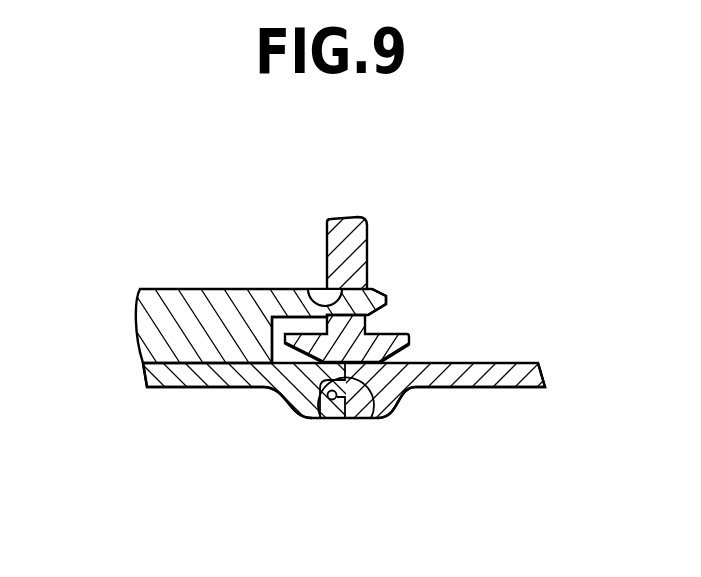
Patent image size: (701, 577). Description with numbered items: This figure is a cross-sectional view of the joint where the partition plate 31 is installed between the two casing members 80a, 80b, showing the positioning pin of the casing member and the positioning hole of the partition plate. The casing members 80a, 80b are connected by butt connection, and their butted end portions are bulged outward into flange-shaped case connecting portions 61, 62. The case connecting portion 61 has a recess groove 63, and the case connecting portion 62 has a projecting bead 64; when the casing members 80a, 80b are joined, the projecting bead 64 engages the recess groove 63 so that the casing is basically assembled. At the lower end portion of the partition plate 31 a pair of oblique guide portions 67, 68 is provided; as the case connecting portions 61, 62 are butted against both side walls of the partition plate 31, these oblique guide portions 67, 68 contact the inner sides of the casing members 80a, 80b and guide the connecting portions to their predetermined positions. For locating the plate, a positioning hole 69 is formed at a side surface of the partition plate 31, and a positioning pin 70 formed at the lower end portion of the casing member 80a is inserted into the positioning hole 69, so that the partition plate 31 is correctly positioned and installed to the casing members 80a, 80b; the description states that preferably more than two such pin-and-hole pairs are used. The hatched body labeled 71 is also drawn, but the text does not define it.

The partition plate 31 is at (362, 232).
The case connecting portion 61 is at (287, 413).
The case connecting portion 62 is at (405, 418).
The recess groove 63 is at (320, 418).
The projecting bead 64 is at (372, 418).
The oblique guide portion 67 is at (250, 318).
The oblique guide portion 68 is at (402, 357).
The positioning hole 69 is at (309, 296).
The positioning pin 70 is at (378, 290).
The body 71 is at (158, 342).
The casing member 80a is at (163, 388).
The casing member 80b is at (528, 388).